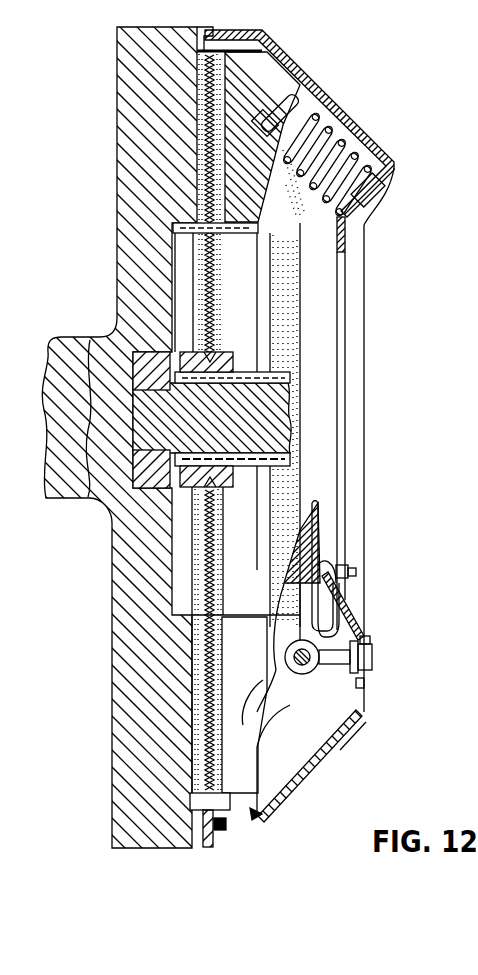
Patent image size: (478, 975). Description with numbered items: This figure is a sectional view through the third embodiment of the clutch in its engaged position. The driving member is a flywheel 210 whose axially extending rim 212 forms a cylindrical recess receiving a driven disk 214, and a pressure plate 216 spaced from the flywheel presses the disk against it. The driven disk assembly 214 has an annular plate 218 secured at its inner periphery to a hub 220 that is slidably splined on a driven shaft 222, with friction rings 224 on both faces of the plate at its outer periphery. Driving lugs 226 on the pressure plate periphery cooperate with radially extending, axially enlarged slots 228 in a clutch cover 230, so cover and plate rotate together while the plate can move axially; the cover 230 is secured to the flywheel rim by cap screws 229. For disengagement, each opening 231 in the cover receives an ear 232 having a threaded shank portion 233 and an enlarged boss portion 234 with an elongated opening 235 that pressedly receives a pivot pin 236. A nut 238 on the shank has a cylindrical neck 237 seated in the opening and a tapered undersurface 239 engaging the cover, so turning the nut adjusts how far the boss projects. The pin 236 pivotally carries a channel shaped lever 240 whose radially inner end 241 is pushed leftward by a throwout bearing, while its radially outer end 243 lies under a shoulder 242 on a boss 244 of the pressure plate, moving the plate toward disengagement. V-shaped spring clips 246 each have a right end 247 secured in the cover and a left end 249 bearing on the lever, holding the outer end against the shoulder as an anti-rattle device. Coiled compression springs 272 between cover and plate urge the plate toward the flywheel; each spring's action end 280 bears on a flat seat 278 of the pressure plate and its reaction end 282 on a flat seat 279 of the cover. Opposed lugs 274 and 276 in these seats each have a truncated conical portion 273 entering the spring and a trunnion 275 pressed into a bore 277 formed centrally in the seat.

The flywheel 210 is at (121, 144).
The axially extending rim 212 is at (192, 850).
The driven disk 214 is at (224, 350).
The pressure plate 216 is at (262, 752).
The annular plate 218 is at (199, 316).
The hub 220 is at (189, 358).
The driven shaft 222 is at (239, 440).
The friction rings 224 is at (176, 240).
The driving lugs 226 is at (258, 820).
The slots 228 is at (271, 812).
The cap screws 229 is at (235, 828).
The clutch cover 230 is at (373, 141).
The openings 231 is at (361, 703).
The ear 232 is at (337, 636).
The threaded shank portion 233 is at (351, 634).
The enlarged boss portion 234 is at (254, 617).
The elongated opening 235 is at (296, 660).
The pivot pin 236 is at (300, 626).
The cylindrical neck 237 is at (372, 656).
The nut 238 is at (368, 640).
The tapered undersurface 239 is at (363, 684).
The channel shaped lever 240 is at (326, 533).
The radially inner end 241 is at (319, 505).
The shoulder 242 is at (356, 713).
The radially outer end 243 is at (338, 725).
The boss 244 is at (320, 749).
The V-shaped spring clips 246 is at (349, 567).
The right end 247 is at (349, 572).
The left end 249 is at (327, 573).
The coiled compression springs 272 is at (352, 136).
The truncated conical portion 273 is at (336, 106).
The lug 274 is at (273, 175).
The trunnion 275 is at (304, 80).
The lug 276 is at (322, 209).
The bore 277 is at (282, 54).
The flat seat 278 is at (265, 118).
The flat seat 279 is at (297, 222).
The action end 280 is at (318, 94).
The reaction end 282 is at (380, 182).